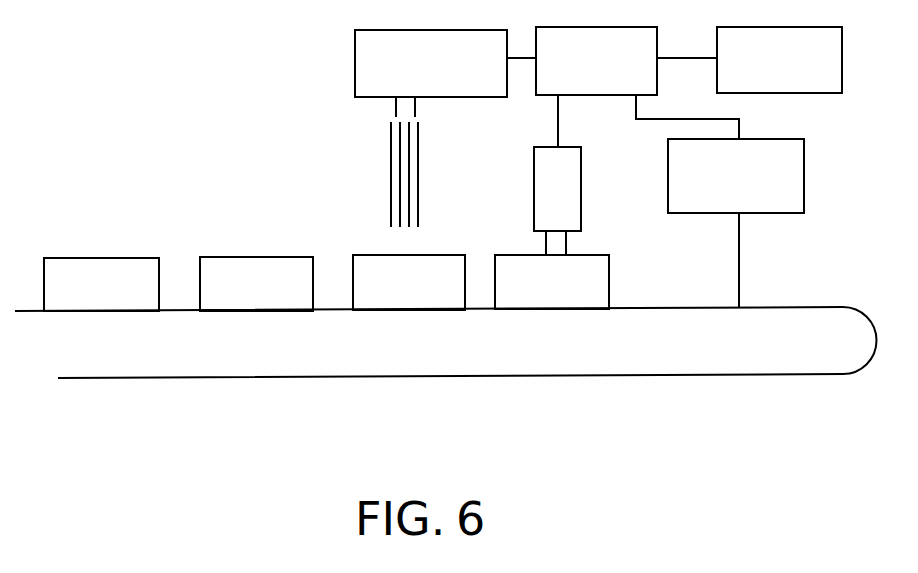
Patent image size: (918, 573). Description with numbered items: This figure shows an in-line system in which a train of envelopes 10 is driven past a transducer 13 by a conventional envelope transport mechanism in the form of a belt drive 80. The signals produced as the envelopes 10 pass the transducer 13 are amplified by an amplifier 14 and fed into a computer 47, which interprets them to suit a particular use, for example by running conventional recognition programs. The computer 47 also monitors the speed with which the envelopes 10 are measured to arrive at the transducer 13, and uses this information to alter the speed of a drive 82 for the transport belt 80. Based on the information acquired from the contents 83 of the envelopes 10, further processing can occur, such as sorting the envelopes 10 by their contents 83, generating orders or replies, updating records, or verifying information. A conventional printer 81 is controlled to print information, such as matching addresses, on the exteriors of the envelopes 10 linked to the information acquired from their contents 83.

The envelopes 10 is at (117, 297).
The transducer 13 is at (391, 152).
The amplifier 14 is at (438, 72).
The computer 47 is at (604, 73).
The belt drive 80 is at (310, 380).
The printer 81 is at (569, 201).
The drive 82 is at (751, 187).
The contents 83 is at (791, 70).